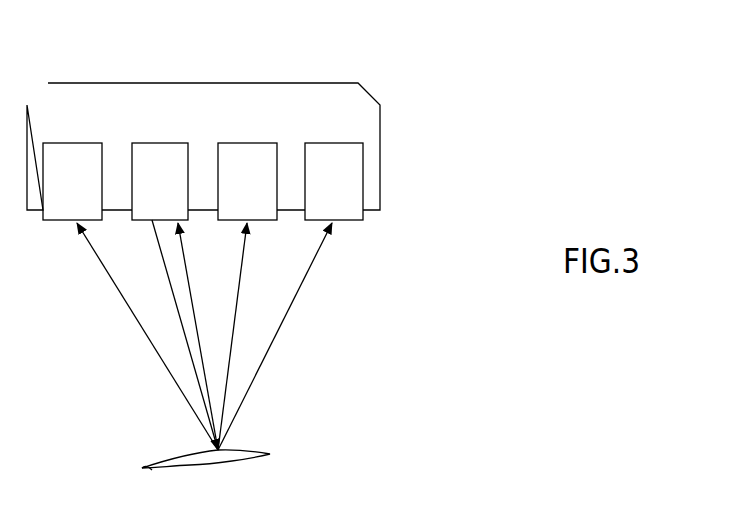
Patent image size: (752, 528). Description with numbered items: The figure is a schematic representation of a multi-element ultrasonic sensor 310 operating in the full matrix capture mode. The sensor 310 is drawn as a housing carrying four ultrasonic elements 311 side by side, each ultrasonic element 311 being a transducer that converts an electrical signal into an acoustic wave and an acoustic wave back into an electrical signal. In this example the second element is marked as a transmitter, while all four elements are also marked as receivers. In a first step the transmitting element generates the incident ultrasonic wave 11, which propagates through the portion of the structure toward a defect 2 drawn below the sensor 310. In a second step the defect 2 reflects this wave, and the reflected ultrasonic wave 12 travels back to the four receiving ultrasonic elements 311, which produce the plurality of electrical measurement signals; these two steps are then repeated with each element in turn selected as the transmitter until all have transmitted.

The multi-element ultrasonic sensor 310 is at (205, 83).
The ultrasonic element 311 is at (363, 187).
The incident ultrasonic wave 11 is at (168, 285).
The reflected ultrasonic wave 12 is at (288, 317).
The defect 2 is at (270, 454).